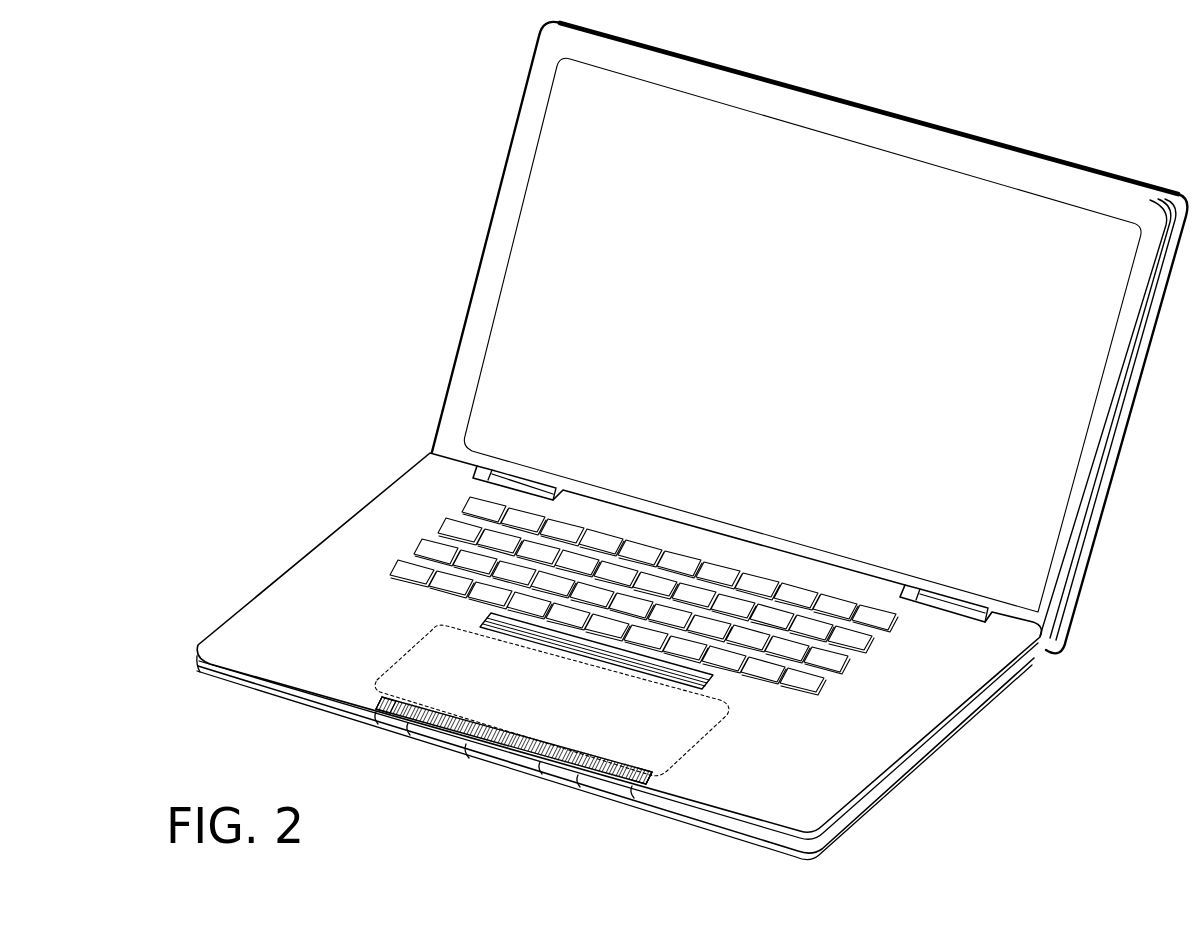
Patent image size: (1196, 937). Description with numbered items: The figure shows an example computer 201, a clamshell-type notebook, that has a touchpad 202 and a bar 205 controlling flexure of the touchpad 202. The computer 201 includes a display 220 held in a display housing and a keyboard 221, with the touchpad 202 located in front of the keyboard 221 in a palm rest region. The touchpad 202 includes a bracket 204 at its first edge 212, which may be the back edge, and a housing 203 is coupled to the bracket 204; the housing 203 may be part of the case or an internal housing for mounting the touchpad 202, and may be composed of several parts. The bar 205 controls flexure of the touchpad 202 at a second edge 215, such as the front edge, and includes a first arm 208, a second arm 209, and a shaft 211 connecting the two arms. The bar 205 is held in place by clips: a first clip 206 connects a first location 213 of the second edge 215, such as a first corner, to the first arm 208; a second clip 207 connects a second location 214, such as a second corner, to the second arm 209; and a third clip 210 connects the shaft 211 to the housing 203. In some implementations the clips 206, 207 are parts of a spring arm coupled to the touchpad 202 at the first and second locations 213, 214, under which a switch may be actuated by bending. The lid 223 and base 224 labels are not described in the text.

The computer 201 is at (395, 443).
The touchpad 202 is at (486, 655).
The housing 203 is at (422, 622).
The bracket 204 is at (517, 648).
The bar 205 is at (412, 730).
The first clip 206 is at (380, 716).
The second clip 207 is at (633, 795).
The first arm 208 is at (382, 702).
The second arm 209 is at (633, 767).
The third clip 210 is at (543, 770).
The shaft 211 is at (580, 787).
The first edge 212 is at (627, 678).
The first location 213 is at (387, 693).
The second location 214 is at (647, 768).
The second edge 215 is at (520, 733).
The display 220 is at (784, 365).
The keyboard 221 is at (390, 577).
The lid 223 is at (470, 300).
The base housing 224 is at (230, 617).